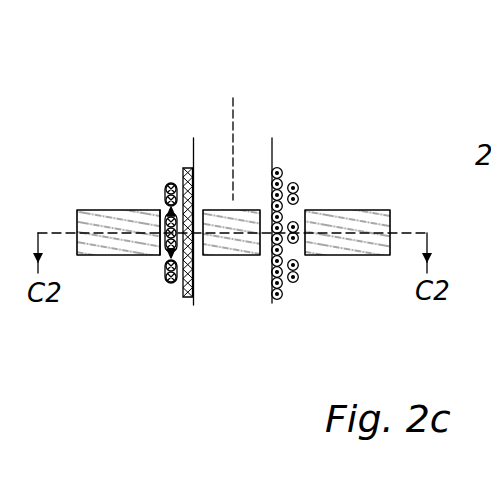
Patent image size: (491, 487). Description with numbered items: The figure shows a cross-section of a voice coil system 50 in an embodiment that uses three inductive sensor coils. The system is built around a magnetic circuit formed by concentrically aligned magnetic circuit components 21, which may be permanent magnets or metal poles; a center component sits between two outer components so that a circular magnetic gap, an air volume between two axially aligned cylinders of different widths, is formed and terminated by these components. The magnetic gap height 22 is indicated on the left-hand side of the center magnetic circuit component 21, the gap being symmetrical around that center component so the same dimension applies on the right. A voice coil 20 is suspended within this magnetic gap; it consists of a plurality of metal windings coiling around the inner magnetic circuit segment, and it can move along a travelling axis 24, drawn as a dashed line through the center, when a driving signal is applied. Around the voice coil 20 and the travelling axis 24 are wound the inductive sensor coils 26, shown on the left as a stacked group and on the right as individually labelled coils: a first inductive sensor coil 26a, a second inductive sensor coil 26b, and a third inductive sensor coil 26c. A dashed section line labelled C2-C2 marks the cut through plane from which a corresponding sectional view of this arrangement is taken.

The voice coil system 50 is at (145, 88).
The voice coil 20 is at (184, 180).
The magnetic circuit component 21 is at (147, 256).
The magnetic gap height 22 is at (137, 255).
The travelling axis 24 is at (234, 118).
The inductive sensor coil 26 is at (166, 228).
The first inductive sensor coil 26a is at (300, 186).
The second inductive sensor coil 26b is at (305, 228).
The third inductive sensor coil 26c is at (297, 284).